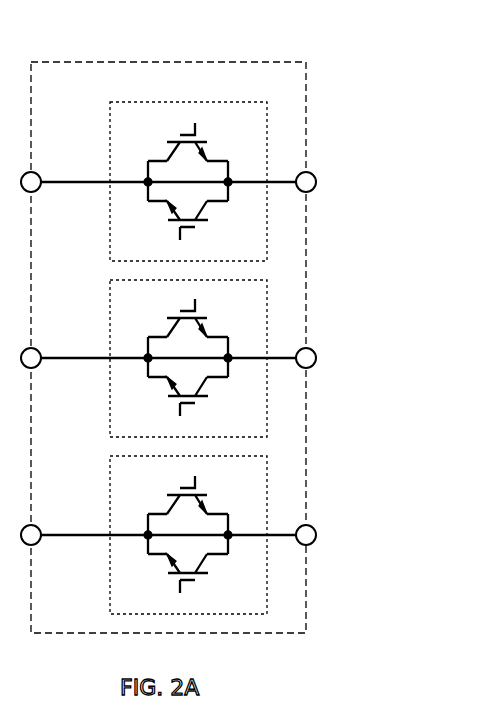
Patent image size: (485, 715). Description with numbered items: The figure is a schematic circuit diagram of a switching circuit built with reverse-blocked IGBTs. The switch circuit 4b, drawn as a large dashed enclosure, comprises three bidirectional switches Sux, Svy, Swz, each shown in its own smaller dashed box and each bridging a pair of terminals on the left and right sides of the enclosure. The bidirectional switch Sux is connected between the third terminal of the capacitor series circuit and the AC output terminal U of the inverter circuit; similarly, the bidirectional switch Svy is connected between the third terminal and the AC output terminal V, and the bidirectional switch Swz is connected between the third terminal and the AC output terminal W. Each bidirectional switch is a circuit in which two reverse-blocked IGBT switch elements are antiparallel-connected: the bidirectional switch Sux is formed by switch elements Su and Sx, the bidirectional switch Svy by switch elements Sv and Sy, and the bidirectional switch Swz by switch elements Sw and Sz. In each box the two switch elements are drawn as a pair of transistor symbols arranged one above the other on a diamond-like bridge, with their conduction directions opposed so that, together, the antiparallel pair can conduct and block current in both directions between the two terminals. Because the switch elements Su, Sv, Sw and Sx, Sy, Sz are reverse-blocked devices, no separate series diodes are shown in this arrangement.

The switch circuit 4b is at (146, 62).
The bidirectional switch Sux is at (168, 179).
The bidirectional switch Svy is at (168, 354).
The bidirectional switch Swz is at (168, 531).
The switch element Su is at (164, 140).
The switch element Sx is at (208, 220).
The switch element Sv is at (164, 318).
The switch element Sy is at (208, 397).
The switch element Sw is at (164, 490).
The switch element Sz is at (208, 573).